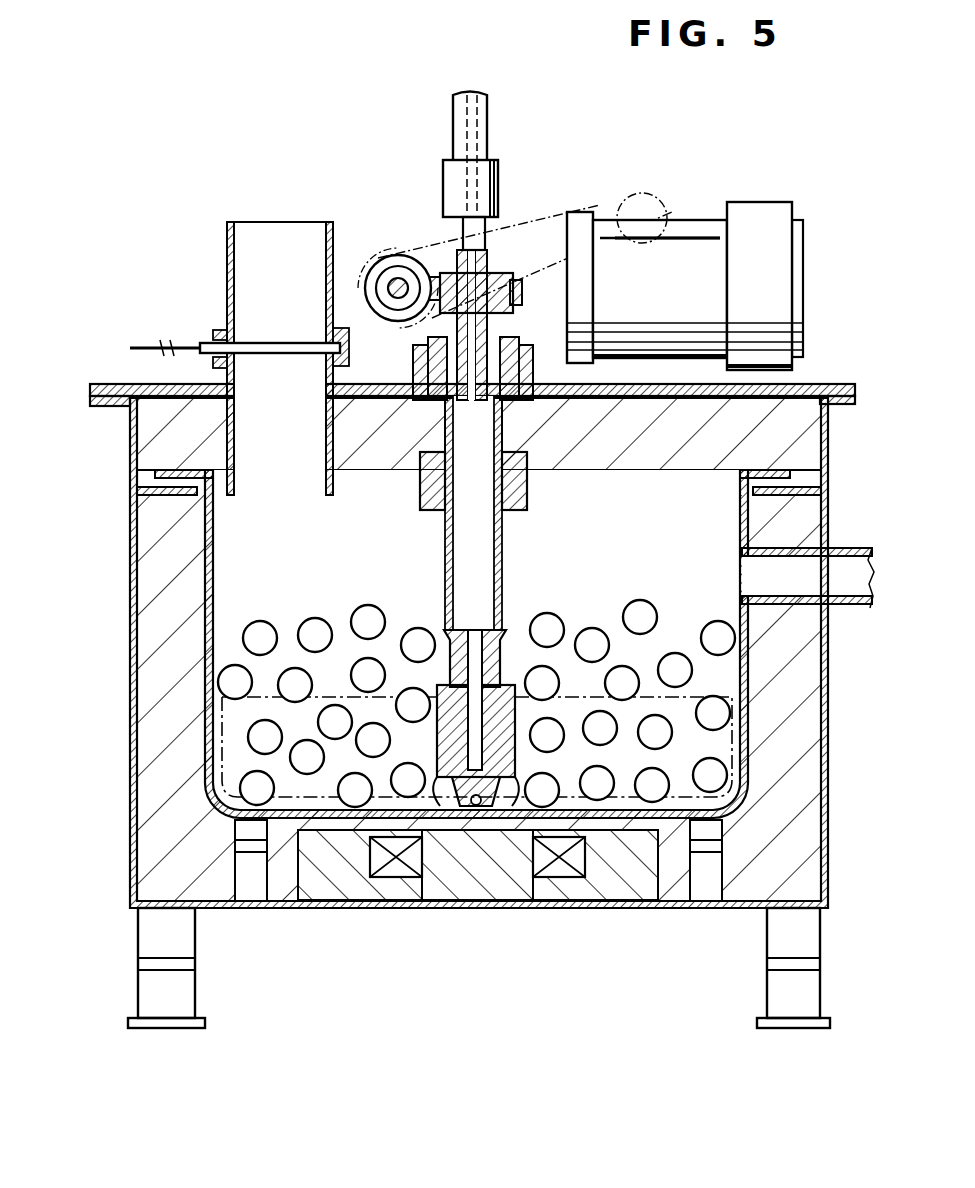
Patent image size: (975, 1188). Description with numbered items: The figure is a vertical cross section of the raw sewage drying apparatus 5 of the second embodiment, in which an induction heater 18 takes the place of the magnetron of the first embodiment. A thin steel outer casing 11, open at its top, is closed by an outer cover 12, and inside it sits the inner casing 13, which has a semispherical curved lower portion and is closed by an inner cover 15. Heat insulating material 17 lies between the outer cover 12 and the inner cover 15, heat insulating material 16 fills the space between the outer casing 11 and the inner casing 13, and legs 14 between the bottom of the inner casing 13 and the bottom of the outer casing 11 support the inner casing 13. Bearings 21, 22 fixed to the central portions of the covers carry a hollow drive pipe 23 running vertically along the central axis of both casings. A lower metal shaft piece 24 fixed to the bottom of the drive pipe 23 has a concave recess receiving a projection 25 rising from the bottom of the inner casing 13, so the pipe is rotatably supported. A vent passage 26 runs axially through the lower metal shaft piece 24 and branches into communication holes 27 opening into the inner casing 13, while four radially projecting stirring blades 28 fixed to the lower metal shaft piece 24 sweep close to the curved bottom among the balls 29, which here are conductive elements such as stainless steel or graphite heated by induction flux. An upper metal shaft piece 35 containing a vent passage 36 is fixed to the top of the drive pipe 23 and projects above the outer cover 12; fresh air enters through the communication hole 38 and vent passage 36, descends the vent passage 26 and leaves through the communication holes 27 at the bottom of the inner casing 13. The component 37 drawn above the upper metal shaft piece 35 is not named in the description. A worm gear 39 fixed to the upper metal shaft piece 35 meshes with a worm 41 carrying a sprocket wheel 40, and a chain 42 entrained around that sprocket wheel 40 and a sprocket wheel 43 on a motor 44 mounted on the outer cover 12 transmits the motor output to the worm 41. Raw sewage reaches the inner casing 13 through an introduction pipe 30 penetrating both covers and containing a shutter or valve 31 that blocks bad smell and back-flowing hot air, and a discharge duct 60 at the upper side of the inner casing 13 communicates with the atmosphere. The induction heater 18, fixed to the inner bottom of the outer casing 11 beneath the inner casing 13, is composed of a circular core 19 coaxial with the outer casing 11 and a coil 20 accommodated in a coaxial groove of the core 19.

The raw sewage drying apparatus 5 is at (88, 382).
The outer casing 11 is at (827, 750).
The outer cover 12 is at (820, 384).
The inner casing 13 is at (207, 545).
The legs 14 is at (252, 888).
The inner cover 15 is at (696, 478).
The heat insulating material 16 is at (806, 624).
The heat insulating material 17 is at (162, 455).
The induction heater 18 is at (598, 870).
The core 19 is at (334, 880).
The coil 20 is at (396, 868).
The bearing 21 is at (528, 498).
The bearing 22 is at (514, 346).
The hollow drive pipe 23 is at (446, 538).
The lower metal shaft piece 24 is at (498, 638).
The projection 25 is at (478, 808).
The vent passage 26 is at (458, 632).
The communication holes 27 is at (440, 805).
The stirring blades 28 is at (690, 697).
The balls 29 is at (312, 626).
The introduction pipe 30 is at (227, 243).
The shutter or valve 31 is at (262, 345).
The upper metal shaft piece 35 is at (456, 252).
The vent passage 36 is at (488, 238).
The coupling 37 is at (443, 176).
The communication hole 38 is at (488, 104).
The worm gear 39 is at (500, 282).
The sprocket wheel 40 is at (378, 268).
The worm 41 is at (394, 318).
The chain 42 is at (578, 212).
The sprocket wheel 43 is at (660, 218).
The motor 44 is at (760, 210).
The discharge duct 60 is at (850, 548).